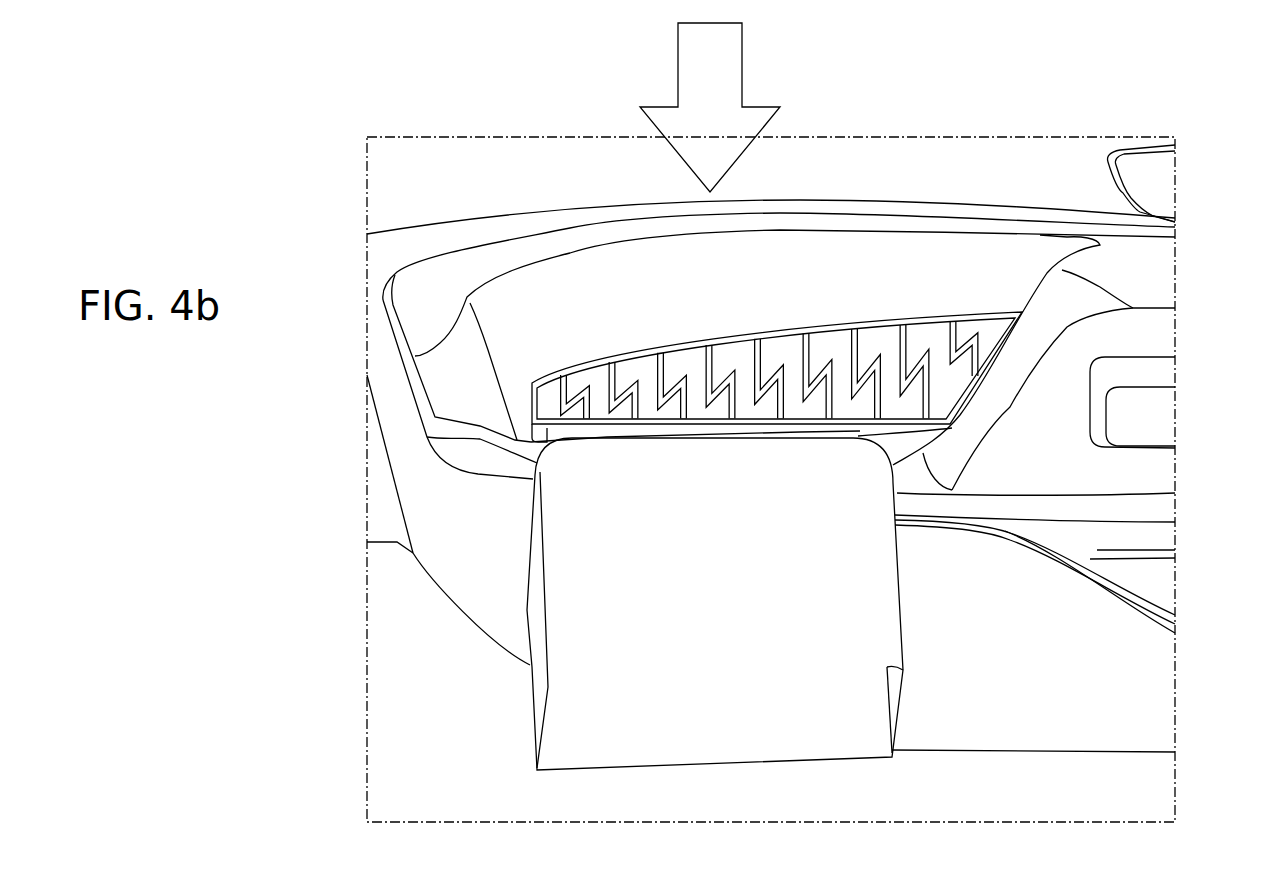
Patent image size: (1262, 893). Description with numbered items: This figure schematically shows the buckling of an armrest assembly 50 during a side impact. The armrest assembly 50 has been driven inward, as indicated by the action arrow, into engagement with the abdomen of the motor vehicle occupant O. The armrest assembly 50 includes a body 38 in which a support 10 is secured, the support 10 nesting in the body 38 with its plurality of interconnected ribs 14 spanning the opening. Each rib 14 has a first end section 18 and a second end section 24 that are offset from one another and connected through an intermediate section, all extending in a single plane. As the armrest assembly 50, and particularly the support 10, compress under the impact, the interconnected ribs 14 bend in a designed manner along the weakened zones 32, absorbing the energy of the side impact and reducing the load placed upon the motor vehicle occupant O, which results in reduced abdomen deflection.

The support 10 is at (617, 342).
The interconnected ribs 14 is at (917, 350).
The first end section 18 is at (628, 410).
The second end section 24 is at (603, 383).
The weakened zones 32 is at (808, 368).
The body 38 is at (490, 348).
The armrest assembly 50 is at (885, 267).
The motor vehicle occupant O is at (753, 722).